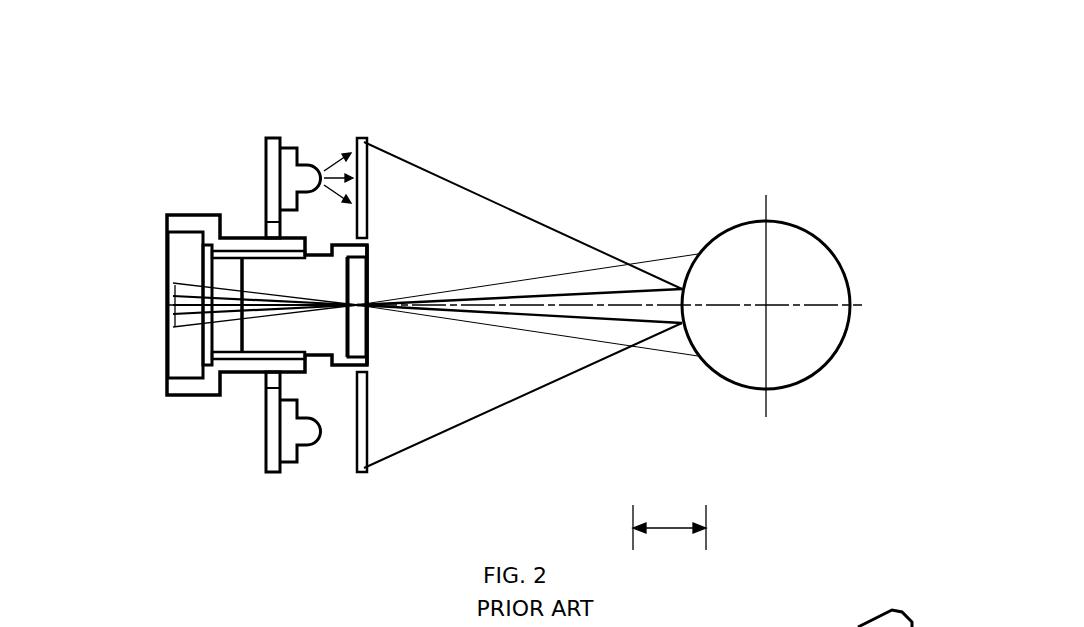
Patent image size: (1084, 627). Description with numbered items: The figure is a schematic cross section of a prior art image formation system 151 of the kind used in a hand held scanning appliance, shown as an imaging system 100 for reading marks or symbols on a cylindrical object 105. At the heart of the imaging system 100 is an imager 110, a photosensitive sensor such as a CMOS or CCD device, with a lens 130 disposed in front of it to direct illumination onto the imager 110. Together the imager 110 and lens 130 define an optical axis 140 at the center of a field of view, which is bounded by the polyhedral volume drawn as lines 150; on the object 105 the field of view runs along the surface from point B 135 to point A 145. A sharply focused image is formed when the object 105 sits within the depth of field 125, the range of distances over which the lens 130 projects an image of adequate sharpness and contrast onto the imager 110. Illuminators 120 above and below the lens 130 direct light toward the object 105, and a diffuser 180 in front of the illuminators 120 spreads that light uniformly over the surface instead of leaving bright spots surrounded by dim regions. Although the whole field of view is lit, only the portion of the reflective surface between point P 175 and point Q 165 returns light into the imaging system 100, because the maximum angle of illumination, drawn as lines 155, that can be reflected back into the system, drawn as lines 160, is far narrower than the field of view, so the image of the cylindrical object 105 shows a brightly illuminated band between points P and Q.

The imaging system 100 is at (155, 100).
The object 105 is at (792, 223).
The imager 110 is at (172, 305).
The illuminators 120 is at (290, 147).
The depth of field 125 is at (662, 522).
The lens 130 is at (343, 372).
The point B 135 is at (702, 252).
The optical axis 140 is at (467, 308).
The point A 145 is at (702, 360).
The lines bounding the field of view 150 is at (558, 273).
The image formation system 151 is at (748, 42).
The lines of maximum angle of illumination 155 is at (413, 165).
The lines of reflected illumination 160 is at (497, 297).
The point Q 165 is at (682, 287).
The point P 175 is at (681, 325).
The diffuser 180 is at (362, 160).